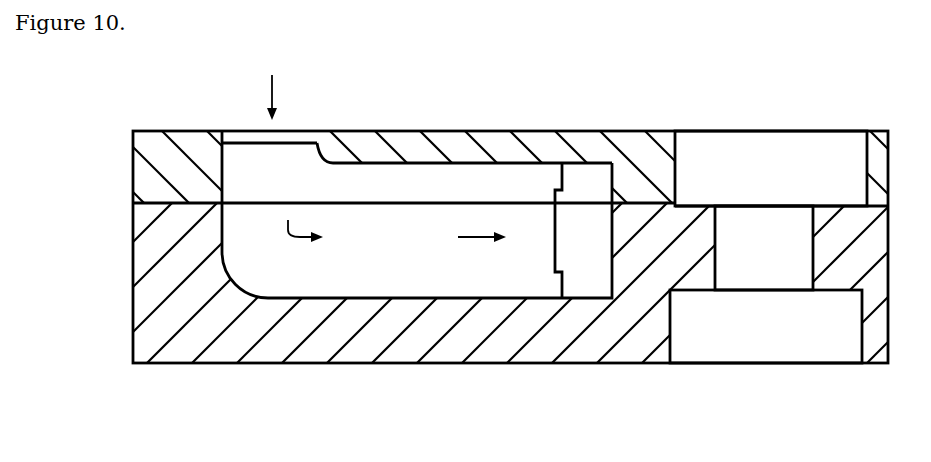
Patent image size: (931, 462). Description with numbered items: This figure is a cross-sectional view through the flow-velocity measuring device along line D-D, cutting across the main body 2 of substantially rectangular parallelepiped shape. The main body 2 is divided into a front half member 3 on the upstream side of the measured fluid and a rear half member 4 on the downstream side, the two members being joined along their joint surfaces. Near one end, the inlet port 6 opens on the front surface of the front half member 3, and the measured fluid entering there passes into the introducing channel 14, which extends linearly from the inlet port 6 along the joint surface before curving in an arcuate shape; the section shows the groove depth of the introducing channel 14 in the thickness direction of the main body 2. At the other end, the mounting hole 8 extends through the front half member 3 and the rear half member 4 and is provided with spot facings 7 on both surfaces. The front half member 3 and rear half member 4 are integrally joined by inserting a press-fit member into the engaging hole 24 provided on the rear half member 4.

The main body 2 is at (124, 146).
The front half member 3 is at (455, 131).
The rear half member 4 is at (392, 363).
The inlet port 6 is at (317, 143).
The spot facings 7 is at (778, 182).
The mounting hole 8 is at (778, 262).
The introducing channel 14 is at (416, 252).
The engaging hole 24 is at (566, 177).